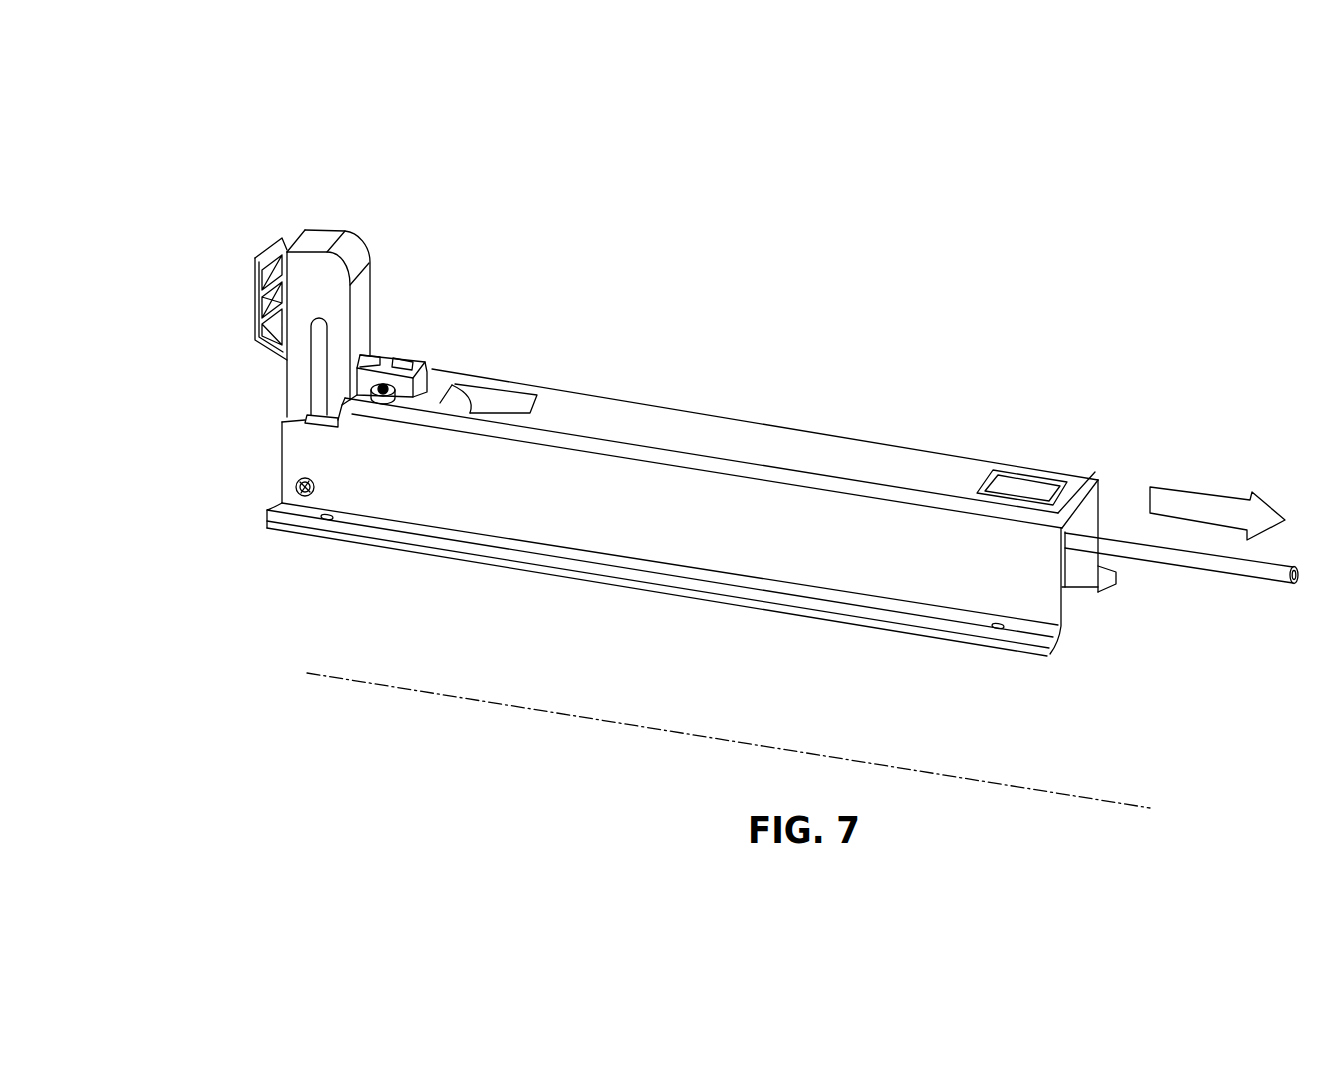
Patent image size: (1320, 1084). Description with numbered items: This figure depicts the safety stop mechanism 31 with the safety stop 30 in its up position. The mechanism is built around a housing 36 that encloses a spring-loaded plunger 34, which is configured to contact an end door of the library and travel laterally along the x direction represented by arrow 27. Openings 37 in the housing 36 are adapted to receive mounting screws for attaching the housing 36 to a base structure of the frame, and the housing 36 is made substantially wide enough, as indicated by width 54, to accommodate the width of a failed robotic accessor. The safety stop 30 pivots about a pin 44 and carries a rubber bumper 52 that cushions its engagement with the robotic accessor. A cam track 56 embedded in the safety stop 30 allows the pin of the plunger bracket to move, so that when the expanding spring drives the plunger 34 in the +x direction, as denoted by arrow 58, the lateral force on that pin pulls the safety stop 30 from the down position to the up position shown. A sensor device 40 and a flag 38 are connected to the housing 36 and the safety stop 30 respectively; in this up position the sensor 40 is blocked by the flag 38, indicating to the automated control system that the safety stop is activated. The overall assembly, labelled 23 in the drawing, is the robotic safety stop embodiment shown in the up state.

The bracket assembly 23 is at (311, 228).
The safety stop 30 is at (328, 234).
The rubber bumper 52 is at (258, 290).
The cam track 56 is at (318, 365).
The flag 38 is at (380, 354).
The sensor device 40 is at (364, 380).
The pin 44 is at (300, 487).
The housing 36 is at (716, 420).
The safety stop mechanism 31 is at (817, 420).
The width 54 is at (1078, 428).
The openings 37 is at (1002, 630).
The spring-loaded plunger 34 is at (1196, 574).
The arrow 58 is at (1178, 490).
The arrow 27 is at (486, 703).